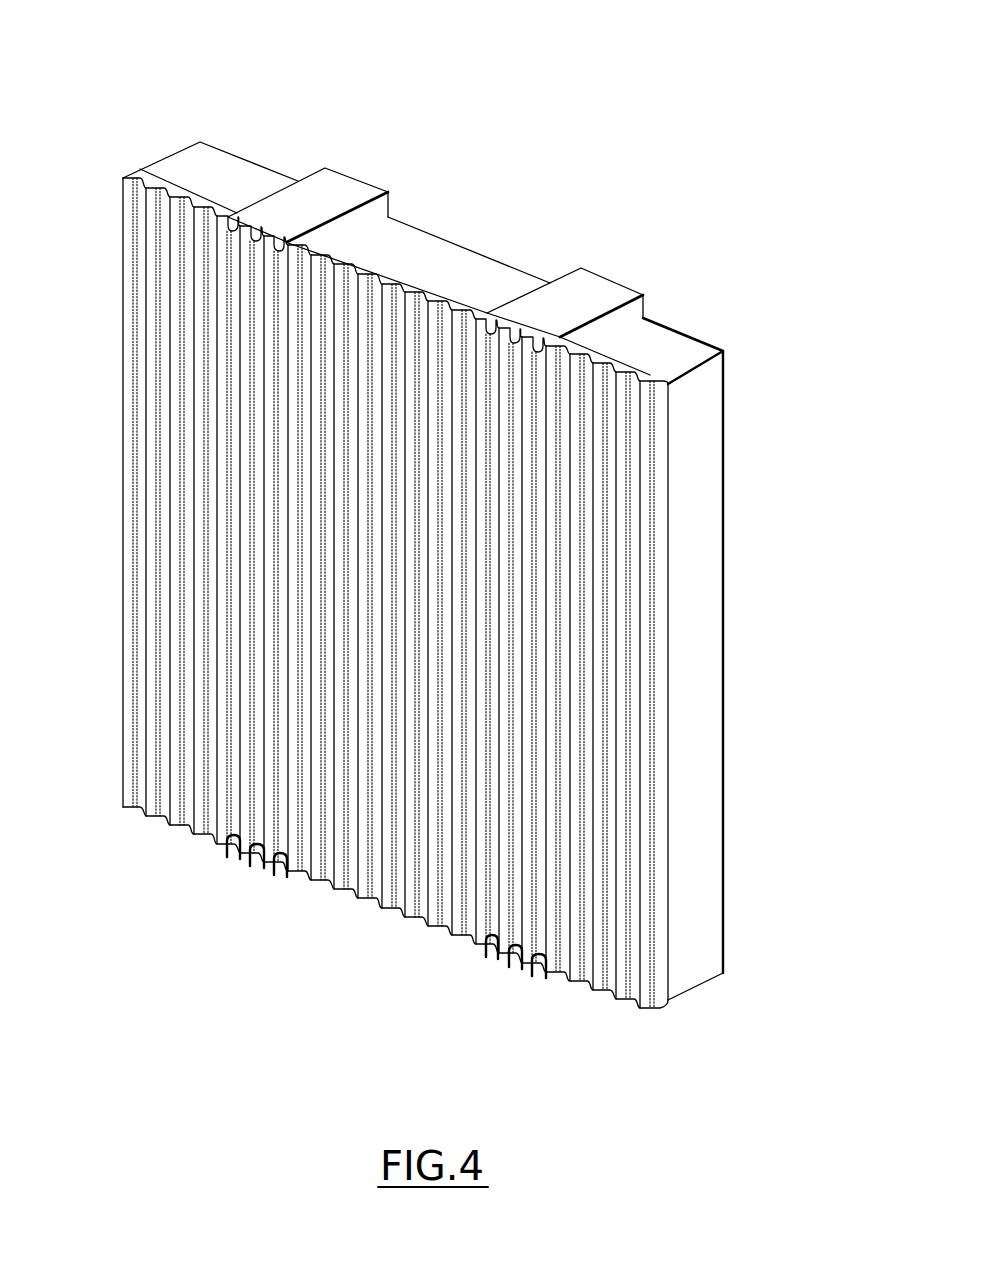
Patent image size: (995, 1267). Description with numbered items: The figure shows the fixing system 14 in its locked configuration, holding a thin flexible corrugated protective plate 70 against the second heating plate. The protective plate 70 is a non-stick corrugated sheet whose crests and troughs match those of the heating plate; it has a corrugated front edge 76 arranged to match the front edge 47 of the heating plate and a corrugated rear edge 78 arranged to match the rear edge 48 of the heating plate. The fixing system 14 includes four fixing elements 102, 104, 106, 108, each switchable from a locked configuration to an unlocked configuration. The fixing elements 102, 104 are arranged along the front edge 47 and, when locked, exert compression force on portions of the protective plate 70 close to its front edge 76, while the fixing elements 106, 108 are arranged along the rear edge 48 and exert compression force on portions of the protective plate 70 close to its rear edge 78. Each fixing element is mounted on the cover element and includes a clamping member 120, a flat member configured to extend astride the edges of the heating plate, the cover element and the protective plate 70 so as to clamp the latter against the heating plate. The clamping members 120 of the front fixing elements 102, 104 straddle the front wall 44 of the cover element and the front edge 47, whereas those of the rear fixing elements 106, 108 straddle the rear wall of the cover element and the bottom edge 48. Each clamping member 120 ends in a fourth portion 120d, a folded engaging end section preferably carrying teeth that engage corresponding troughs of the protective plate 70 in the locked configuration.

The panel assembly 14 is at (616, 78).
The front wall 44 is at (423, 258).
The front edge 47 is at (400, 270).
The rear edge 48 is at (350, 897).
The protective plate 70 is at (346, 608).
The corrugated front edge 76 is at (650, 378).
The corrugated rear edge 78 is at (417, 922).
The fixing element 102 is at (297, 160).
The fixing element 104 is at (625, 268).
The fixing element 106 is at (198, 898).
The fixing element 108 is at (500, 987).
The clamping member 120 is at (320, 145).
The fourth portion 120d is at (240, 226).